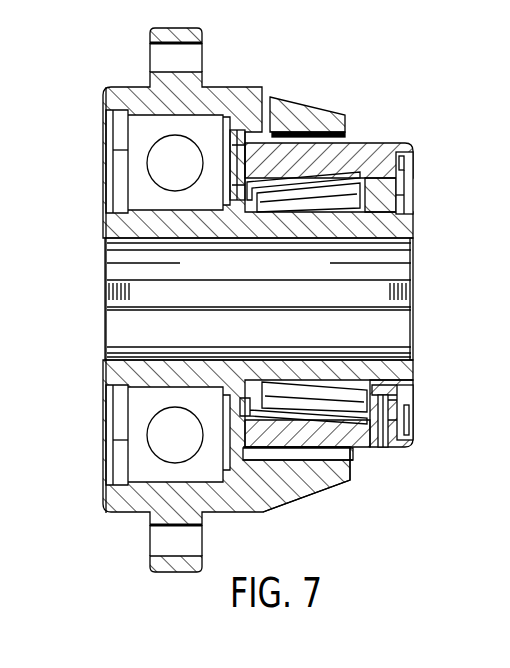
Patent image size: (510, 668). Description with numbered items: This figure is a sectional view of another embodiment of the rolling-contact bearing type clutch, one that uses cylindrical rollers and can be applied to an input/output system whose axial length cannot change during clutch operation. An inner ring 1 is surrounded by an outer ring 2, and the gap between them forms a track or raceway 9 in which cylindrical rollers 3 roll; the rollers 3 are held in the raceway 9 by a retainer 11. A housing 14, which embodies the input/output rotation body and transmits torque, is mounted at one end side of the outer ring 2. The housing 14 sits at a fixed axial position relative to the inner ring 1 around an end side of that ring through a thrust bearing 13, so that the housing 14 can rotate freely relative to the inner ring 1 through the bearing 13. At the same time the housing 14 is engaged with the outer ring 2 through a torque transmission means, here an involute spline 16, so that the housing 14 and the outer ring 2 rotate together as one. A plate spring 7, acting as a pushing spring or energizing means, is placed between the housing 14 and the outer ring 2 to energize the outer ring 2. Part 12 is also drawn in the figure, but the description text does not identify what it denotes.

The inner ring 1 is at (378, 230).
The outer ring 2 is at (366, 150).
The cylindrical rollers 3 is at (352, 410).
The plate spring 7 is at (250, 160).
The raceway 9 is at (392, 391).
The retainer 11 is at (390, 410).
The washer 12 is at (386, 425).
The thrust bearing 13 is at (185, 162).
The housing 14 is at (123, 97).
The involute spline 16 is at (318, 125).